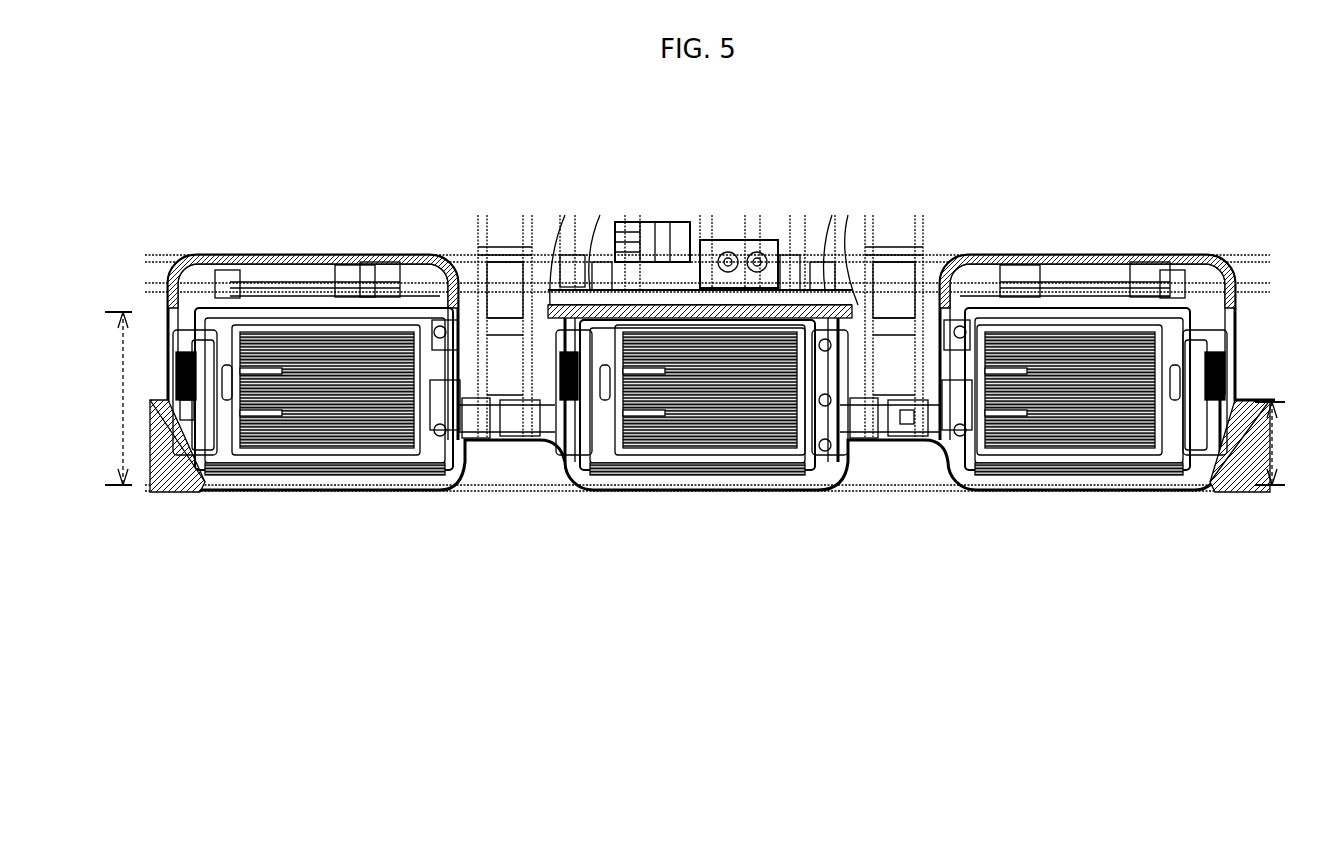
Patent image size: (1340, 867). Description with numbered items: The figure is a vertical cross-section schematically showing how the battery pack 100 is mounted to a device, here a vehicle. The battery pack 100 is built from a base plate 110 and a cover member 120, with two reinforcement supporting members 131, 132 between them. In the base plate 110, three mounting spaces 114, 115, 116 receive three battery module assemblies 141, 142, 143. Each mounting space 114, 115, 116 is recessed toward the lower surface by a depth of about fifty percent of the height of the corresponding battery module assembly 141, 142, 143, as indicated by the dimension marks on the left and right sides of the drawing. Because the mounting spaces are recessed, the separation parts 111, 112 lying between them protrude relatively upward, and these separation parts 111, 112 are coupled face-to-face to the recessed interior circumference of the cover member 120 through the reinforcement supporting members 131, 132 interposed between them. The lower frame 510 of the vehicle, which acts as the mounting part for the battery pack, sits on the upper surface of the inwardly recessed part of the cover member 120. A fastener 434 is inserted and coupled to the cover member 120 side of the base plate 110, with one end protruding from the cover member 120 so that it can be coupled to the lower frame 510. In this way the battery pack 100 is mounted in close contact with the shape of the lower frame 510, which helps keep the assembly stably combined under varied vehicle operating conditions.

The battery pack 100 is at (618, 553).
The base plate 110 is at (200, 478).
The separation part 111 is at (528, 440).
The separation part 112 is at (868, 440).
The mounting space 114 is at (262, 470).
The mounting space 115 is at (655, 468).
The mounting space 116 is at (1007, 468).
The cover member 120 is at (183, 272).
The reinforcement supporting member 131 is at (477, 413).
The reinforcement supporting member 132 is at (890, 405).
The battery module assembly 141 is at (363, 455).
The battery module assembly 142 is at (758, 455).
The battery module assembly 143 is at (1113, 455).
The fastener 434 is at (905, 440).
The lower frame 510 is at (917, 212).